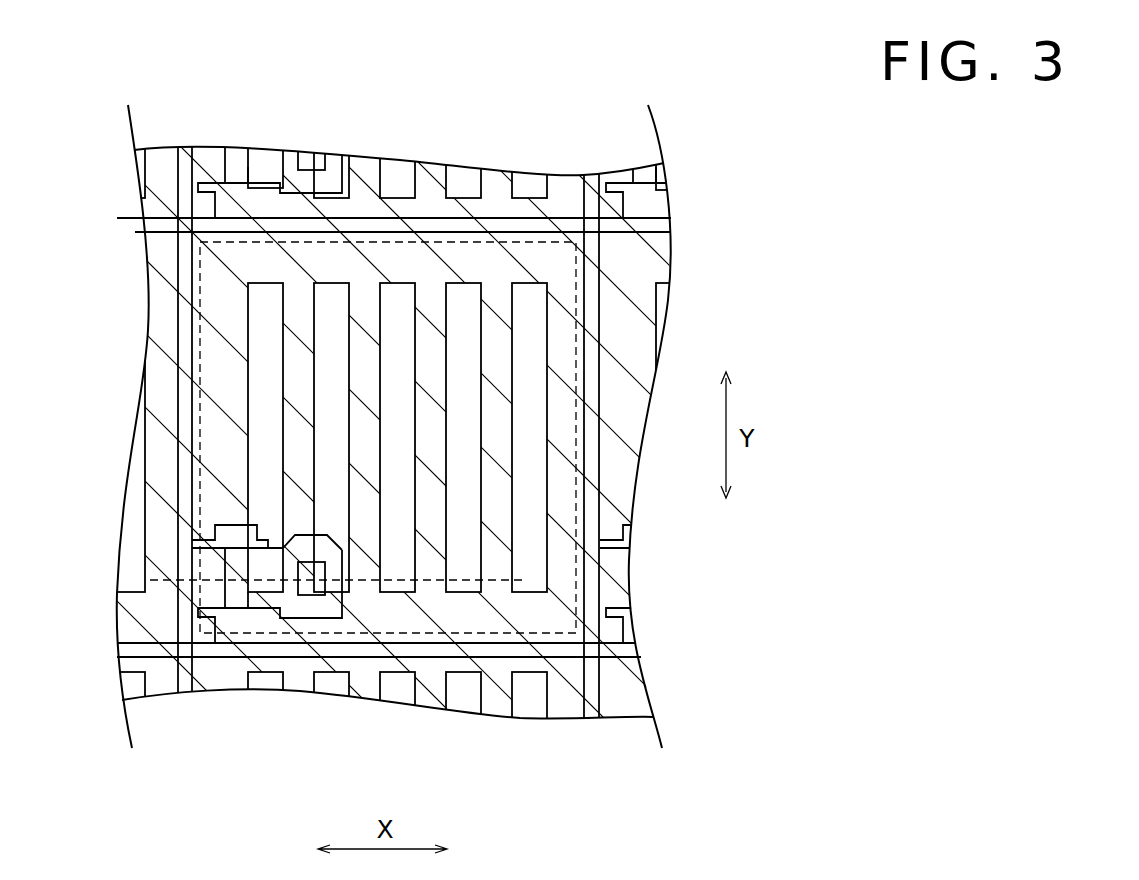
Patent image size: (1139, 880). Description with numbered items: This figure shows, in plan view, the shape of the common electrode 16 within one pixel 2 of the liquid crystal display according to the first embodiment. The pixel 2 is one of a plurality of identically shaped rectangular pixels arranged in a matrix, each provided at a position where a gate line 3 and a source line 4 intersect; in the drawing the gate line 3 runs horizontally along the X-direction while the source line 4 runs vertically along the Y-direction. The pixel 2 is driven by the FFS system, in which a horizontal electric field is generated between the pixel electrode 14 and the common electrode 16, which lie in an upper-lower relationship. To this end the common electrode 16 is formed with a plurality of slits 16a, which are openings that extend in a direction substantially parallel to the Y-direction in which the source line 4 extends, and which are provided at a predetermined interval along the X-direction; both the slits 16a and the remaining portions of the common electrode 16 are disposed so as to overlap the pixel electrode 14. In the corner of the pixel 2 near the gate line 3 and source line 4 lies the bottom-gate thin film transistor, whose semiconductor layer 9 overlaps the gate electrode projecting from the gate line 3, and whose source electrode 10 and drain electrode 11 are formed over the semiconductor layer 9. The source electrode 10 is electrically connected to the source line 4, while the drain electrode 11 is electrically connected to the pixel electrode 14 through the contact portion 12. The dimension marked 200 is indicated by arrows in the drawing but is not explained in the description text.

The pixel 2 is at (497, 560).
The gate line 3 is at (426, 650).
The source line 4 is at (186, 675).
The semiconductor layer 9 is at (233, 605).
The source electrode 10 is at (208, 600).
The drain electrode 11 is at (272, 597).
The contact portion 12 is at (313, 588).
The pixel electrode 14 is at (555, 237).
The common electrode 16 is at (521, 204).
The slit 16a is at (250, 285).
The width 200 is at (531, 593).